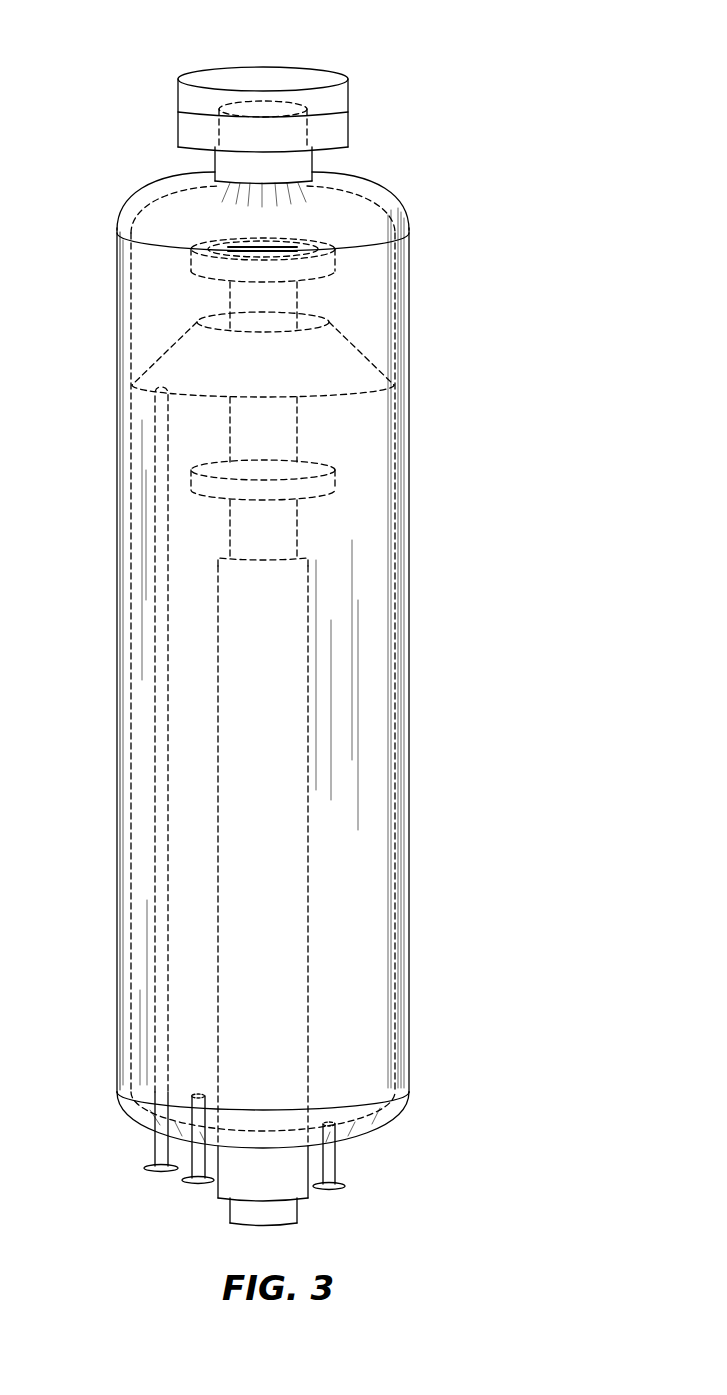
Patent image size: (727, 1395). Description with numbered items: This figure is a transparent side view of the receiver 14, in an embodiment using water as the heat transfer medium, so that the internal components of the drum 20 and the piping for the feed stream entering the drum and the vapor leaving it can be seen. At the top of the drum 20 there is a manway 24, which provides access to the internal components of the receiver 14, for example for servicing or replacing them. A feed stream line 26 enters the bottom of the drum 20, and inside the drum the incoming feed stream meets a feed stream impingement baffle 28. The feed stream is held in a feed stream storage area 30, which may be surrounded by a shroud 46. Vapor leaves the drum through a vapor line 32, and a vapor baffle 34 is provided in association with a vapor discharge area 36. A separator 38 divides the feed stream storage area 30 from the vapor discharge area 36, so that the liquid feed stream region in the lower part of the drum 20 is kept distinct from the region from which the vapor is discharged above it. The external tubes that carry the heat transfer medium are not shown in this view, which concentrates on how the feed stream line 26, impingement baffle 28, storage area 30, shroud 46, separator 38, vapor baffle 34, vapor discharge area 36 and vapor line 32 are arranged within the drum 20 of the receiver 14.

The receiver 14 is at (447, 52).
The drum 20 is at (117, 437).
The manway 24 is at (207, 80).
The feed stream line 26 is at (305, 1203).
The feed stream impingement baffle 28 is at (335, 482).
The feed stream storage area 30 is at (143, 683).
The vapor line 32 is at (230, 300).
The vapor baffle 34 is at (335, 258).
The vapor discharge area 36 is at (382, 326).
The separator 38 is at (160, 357).
The shroud 46 is at (143, 985).